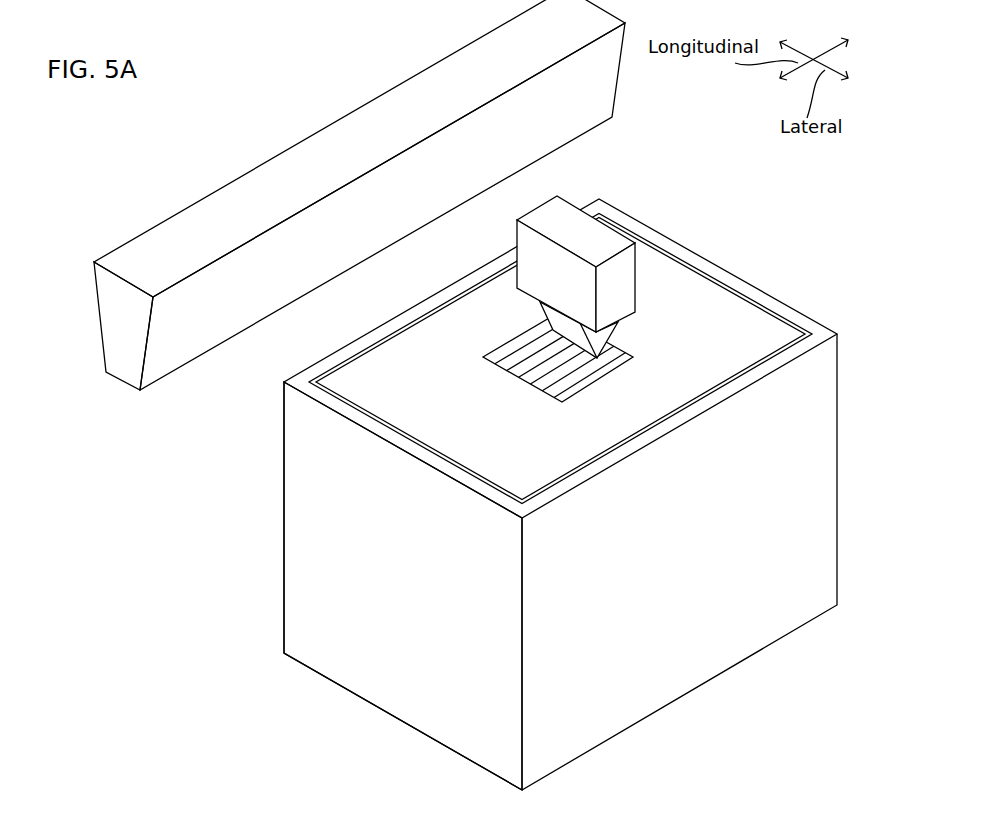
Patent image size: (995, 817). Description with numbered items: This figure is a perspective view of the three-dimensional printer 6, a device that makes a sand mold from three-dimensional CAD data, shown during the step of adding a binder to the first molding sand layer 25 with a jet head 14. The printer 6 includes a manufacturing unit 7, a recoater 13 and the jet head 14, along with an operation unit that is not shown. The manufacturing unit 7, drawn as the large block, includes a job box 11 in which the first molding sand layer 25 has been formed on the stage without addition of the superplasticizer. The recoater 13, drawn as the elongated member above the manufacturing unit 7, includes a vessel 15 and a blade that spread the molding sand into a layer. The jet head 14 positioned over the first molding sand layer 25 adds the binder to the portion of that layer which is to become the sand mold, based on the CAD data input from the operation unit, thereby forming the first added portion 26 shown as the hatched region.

The 3D printer 6 is at (517, 469).
The manufacturing unit 7 is at (517, 494).
The job box 11 is at (308, 605).
The recoater 13 is at (359, 195).
The jet head 14 is at (595, 243).
The vessel 15 is at (283, 168).
The first molding sand layer 25 is at (718, 315).
The first added portion 26 is at (577, 382).